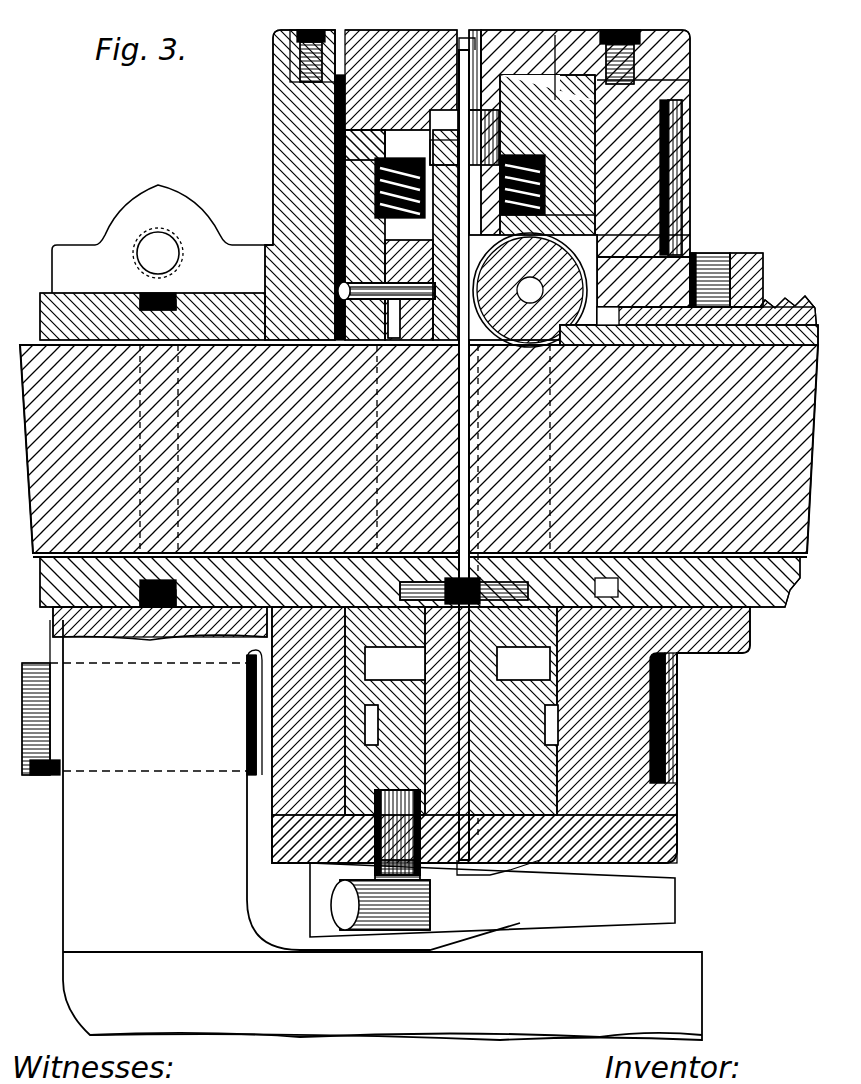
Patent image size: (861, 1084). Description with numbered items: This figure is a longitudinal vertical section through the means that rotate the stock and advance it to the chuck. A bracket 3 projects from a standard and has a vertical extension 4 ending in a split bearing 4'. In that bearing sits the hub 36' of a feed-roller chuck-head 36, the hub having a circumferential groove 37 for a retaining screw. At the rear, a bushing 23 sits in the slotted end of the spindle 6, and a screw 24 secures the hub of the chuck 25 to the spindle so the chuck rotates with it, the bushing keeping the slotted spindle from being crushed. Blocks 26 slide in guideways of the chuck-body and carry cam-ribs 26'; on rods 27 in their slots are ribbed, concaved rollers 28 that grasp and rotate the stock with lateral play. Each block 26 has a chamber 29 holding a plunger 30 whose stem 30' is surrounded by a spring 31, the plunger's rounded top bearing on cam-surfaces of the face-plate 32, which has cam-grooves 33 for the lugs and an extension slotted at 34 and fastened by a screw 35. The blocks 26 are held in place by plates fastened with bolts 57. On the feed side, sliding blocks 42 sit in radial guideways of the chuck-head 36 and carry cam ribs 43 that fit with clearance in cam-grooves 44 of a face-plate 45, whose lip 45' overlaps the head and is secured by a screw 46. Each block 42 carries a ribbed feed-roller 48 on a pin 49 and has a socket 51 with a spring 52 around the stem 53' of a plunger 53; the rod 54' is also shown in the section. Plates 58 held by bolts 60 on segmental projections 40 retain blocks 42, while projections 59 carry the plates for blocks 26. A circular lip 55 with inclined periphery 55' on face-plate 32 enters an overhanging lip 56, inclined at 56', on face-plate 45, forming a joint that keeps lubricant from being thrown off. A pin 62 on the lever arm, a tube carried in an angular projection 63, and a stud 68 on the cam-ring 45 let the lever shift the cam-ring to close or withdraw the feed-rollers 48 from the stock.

The bracket 3 is at (382, 996).
The vertical extension 4 is at (362, 828).
The split bearing 4' is at (162, 239).
The spindle 6 is at (780, 318).
The bushing 23 is at (796, 590).
The screw 24 is at (735, 258).
The chuck 25 is at (688, 108).
The blocks 26 is at (715, 177).
The cam-ribs 26' is at (550, 52).
The rods or spindles 27 is at (535, 285).
The ribbed or corrugated rollers 28 is at (689, 320).
The chamber 29 is at (575, 150).
The plunger 30 is at (419, 422).
The stem 30' is at (616, 185).
The spring 31 is at (600, 220).
The face-plate 32 is at (540, 897).
The cam-grooves 33 is at (560, 728).
The slot 34 is at (660, 85).
The screw 35 is at (617, 35).
The feed-roller chuck-head 36 is at (174, 661).
The hub 36' is at (152, 307).
The circumferential groove 37 is at (148, 296).
The projections 40 is at (408, 572).
The sliding blocks 42 is at (444, 152).
The cam rib 43 is at (350, 60).
The cam-grooves 44 is at (450, 90).
The face-plate 45 is at (361, 347).
The circular lip or extension 45' is at (470, 857).
The screw 46 is at (306, 34).
The ribbed feed-roller 48 is at (345, 283).
The pin 49 is at (392, 292).
The socket 51 is at (444, 137).
The spring 52 is at (375, 210).
The pin or plunger 53 is at (400, 188).
The stem 53' is at (306, 157).
The rod 54' is at (467, 432).
The circular lip or projection 55 is at (498, 880).
The undercut or inclined periphery 55' is at (380, 905).
The overhanging circular lip 56 is at (495, 802).
The inward inclination 56' is at (460, 891).
The bolts 57 is at (668, 680).
The plates 58 is at (385, 711).
The projections 59 is at (513, 711).
The bolts 60 is at (400, 612).
The pin or stud 62 is at (345, 915).
The angular perforated projection 63 is at (397, 832).
The pin or stud 68 is at (397, 853).